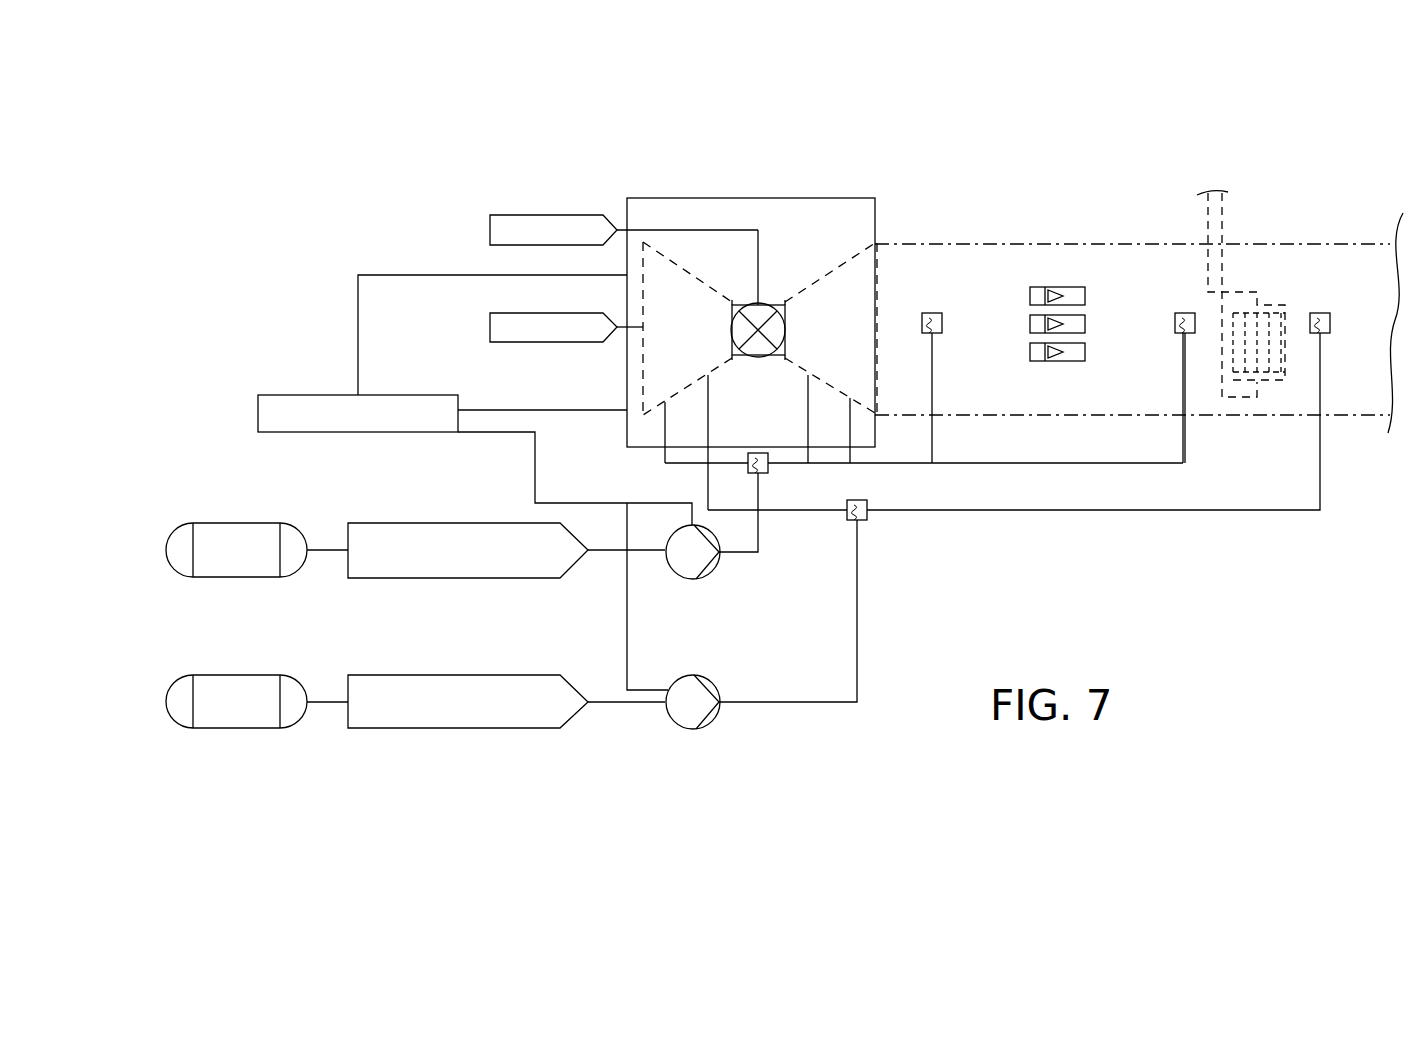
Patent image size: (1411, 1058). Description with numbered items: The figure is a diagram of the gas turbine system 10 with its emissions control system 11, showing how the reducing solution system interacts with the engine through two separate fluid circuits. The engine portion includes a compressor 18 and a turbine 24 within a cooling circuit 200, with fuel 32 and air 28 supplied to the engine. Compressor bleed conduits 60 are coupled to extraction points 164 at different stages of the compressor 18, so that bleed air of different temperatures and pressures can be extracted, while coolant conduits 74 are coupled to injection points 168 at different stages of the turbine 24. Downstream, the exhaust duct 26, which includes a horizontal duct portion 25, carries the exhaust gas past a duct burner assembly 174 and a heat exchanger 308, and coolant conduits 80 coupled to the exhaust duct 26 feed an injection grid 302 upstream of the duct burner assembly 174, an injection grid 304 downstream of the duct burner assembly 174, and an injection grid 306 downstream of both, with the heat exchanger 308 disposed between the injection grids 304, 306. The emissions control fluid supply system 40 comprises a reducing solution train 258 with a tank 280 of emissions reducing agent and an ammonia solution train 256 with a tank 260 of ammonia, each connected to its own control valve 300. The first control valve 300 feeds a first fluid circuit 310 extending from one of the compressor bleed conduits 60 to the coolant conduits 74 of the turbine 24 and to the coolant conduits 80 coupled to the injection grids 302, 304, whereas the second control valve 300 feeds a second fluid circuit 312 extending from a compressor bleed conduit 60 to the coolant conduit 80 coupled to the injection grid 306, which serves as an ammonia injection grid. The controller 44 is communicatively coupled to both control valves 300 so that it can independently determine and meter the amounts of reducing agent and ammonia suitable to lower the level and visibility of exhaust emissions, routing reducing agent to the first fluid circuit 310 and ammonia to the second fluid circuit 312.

The gas turbine system 10 is at (520, 130).
The cooling circuit 200 is at (750, 197).
The compressor 18 is at (688, 270).
The turbine 24 is at (828, 276).
The fuel supply 32 is at (490, 230).
The air supply 28 is at (490, 327).
The controller 44 is at (475, 482).
The extraction points 164 is at (668, 402).
The injection points 168 is at (848, 400).
The compressor bleed conduits 60 is at (665, 458).
The coolant conduits 74 is at (850, 467).
The first fluid circuit 310 is at (968, 463).
The second fluid circuit 312 is at (1040, 510).
The injection grid 302 is at (945, 312).
The injection grid 304 is at (1172, 312).
The injection grid 306 is at (1333, 312).
The coolant conduits 80 is at (934, 397).
The exhaust duct 26 is at (1042, 244).
The horizontal duct portion 25 is at (1348, 418).
The duct burner assembly 174 is at (1033, 426).
The heat exchanger 308 is at (1307, 203).
The reducing solution train 258 is at (170, 522).
The tank 280 is at (240, 520).
The ammonia solution train 256 is at (180, 738).
The tank 260 is at (235, 728).
The control valve 300 is at (713, 568).
The emissions control system 11 is at (918, 600).
The emissions control fluid supply system 40 is at (207, 818).